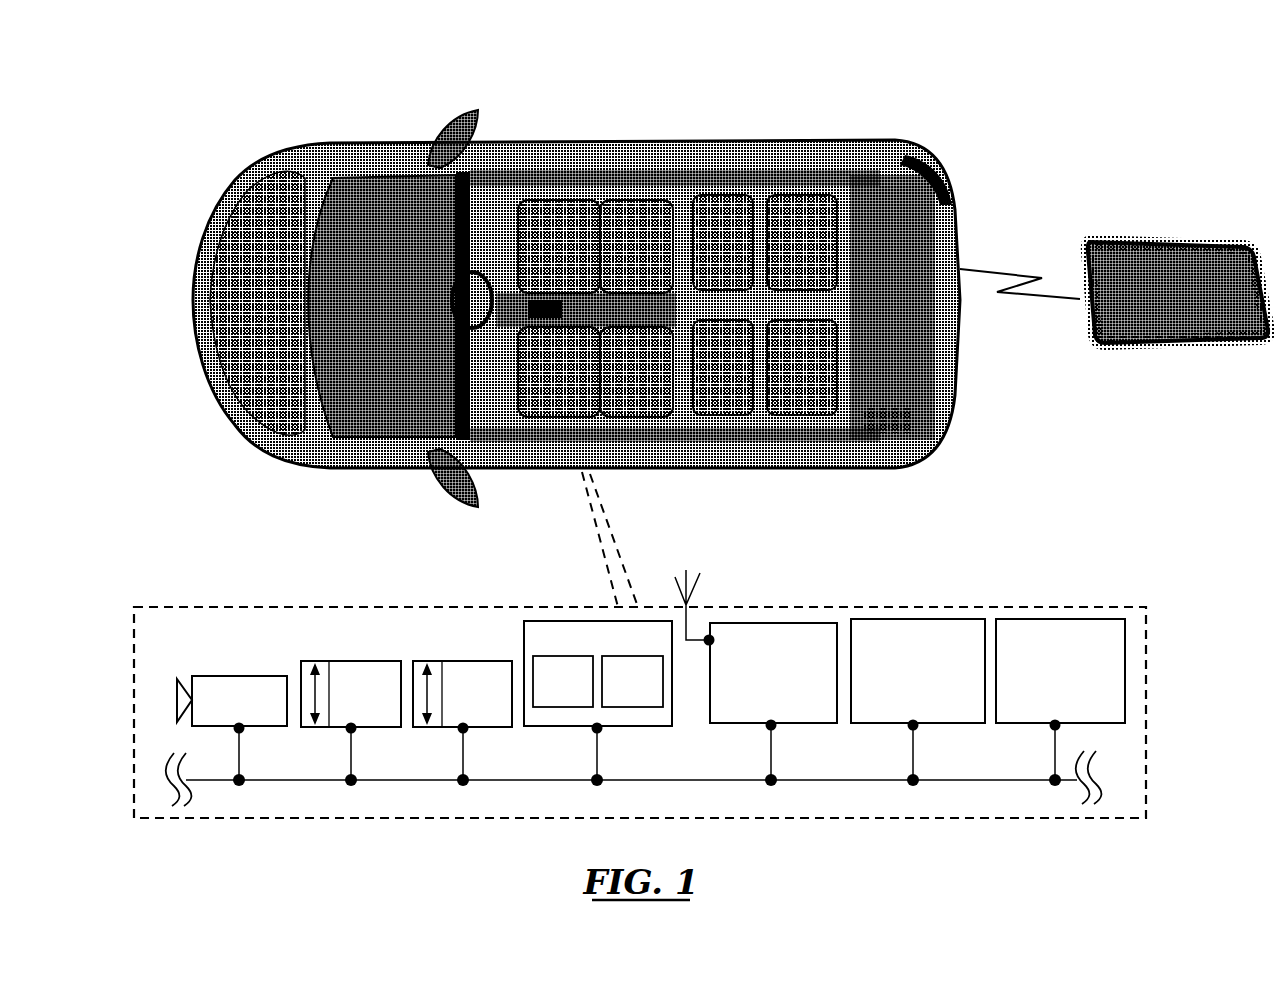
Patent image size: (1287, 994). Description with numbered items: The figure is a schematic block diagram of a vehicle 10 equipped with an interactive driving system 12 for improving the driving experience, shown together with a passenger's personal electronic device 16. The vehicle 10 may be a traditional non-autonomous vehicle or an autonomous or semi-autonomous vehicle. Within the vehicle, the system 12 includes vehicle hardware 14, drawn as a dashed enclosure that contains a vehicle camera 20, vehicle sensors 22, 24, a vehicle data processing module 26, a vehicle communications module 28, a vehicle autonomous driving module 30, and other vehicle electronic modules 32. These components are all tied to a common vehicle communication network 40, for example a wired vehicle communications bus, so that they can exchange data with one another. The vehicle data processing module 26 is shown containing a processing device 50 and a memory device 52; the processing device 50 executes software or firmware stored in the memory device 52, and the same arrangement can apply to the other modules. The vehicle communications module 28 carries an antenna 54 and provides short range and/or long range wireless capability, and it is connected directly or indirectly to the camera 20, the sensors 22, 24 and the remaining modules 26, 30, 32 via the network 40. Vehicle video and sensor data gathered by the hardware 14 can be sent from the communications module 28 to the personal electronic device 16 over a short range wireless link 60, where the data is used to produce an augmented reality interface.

The vehicle 10 is at (260, 94).
The interactive driving system 12 is at (1076, 486).
The vehicle hardware 14 is at (977, 607).
The personal electronic device 16 is at (1172, 245).
The vehicle camera 20 is at (232, 728).
The vehicle sensor 22 is at (351, 720).
The vehicle sensor 24 is at (462, 720).
The vehicle data processing module 26 is at (598, 700).
The vehicle communications module 28 is at (773, 701).
The vehicle autonomous driving module 30 is at (918, 699).
The other vehicle electronic modules 32 is at (1060, 699).
The vehicle communication network 40 is at (853, 781).
The processing device 50 is at (563, 681).
The memory device 52 is at (632, 681).
The antenna 54 is at (694, 580).
The short range wireless link 60 is at (1020, 268).